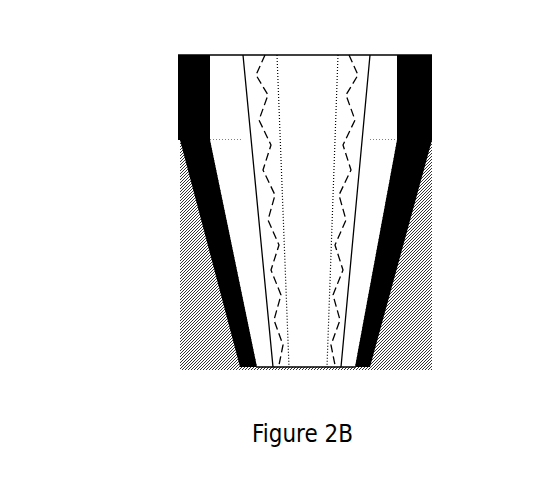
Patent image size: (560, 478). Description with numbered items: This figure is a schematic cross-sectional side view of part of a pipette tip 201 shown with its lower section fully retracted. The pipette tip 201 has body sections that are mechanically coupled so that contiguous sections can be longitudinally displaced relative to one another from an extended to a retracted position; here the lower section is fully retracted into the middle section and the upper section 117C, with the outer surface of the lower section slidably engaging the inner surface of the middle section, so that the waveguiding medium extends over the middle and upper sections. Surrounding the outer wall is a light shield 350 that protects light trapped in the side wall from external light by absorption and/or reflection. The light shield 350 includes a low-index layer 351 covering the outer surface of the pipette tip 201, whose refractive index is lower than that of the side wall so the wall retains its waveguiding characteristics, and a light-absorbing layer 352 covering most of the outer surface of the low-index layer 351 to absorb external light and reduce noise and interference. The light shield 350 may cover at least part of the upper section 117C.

The pipette tip 201 is at (290, 185).
The light shield 350 is at (178, 50).
The low-index layer 351 is at (237, 163).
The light-absorbing layer 352 is at (208, 253).
The upper section 117C is at (350, 70).